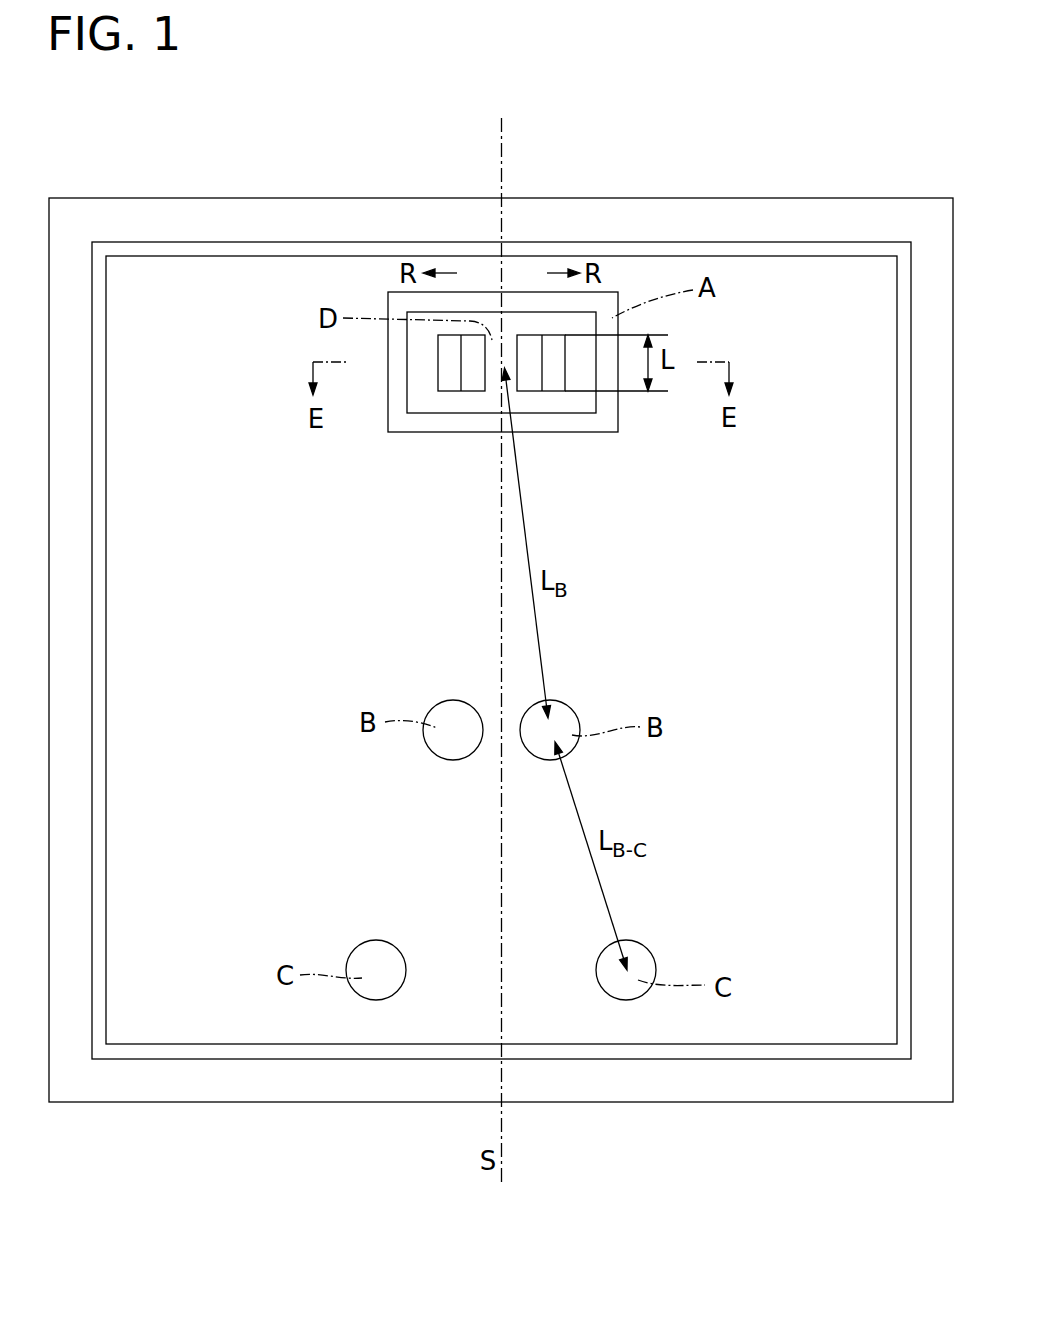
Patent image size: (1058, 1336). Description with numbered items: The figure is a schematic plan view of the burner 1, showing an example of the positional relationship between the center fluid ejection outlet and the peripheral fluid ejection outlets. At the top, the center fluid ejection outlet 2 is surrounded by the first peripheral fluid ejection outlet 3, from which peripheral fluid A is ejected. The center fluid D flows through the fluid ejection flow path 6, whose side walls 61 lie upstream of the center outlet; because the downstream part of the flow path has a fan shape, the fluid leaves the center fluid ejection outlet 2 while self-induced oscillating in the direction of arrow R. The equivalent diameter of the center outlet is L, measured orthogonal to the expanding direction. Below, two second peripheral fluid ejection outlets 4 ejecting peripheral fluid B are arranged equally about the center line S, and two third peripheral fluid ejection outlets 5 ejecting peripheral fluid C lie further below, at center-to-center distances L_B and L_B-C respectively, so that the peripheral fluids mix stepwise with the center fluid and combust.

The burner 1 is at (152, 170).
The center fluid ejection outlet 2 is at (528, 347).
The first peripheral fluid ejection outlet 3 is at (592, 303).
The second peripheral fluid ejection outlet 4 is at (444, 702).
The third peripheral fluid ejection outlet 5 is at (357, 945).
The fluid ejection flow path 6 is at (506, 341).
The side walls 61 is at (494, 371).